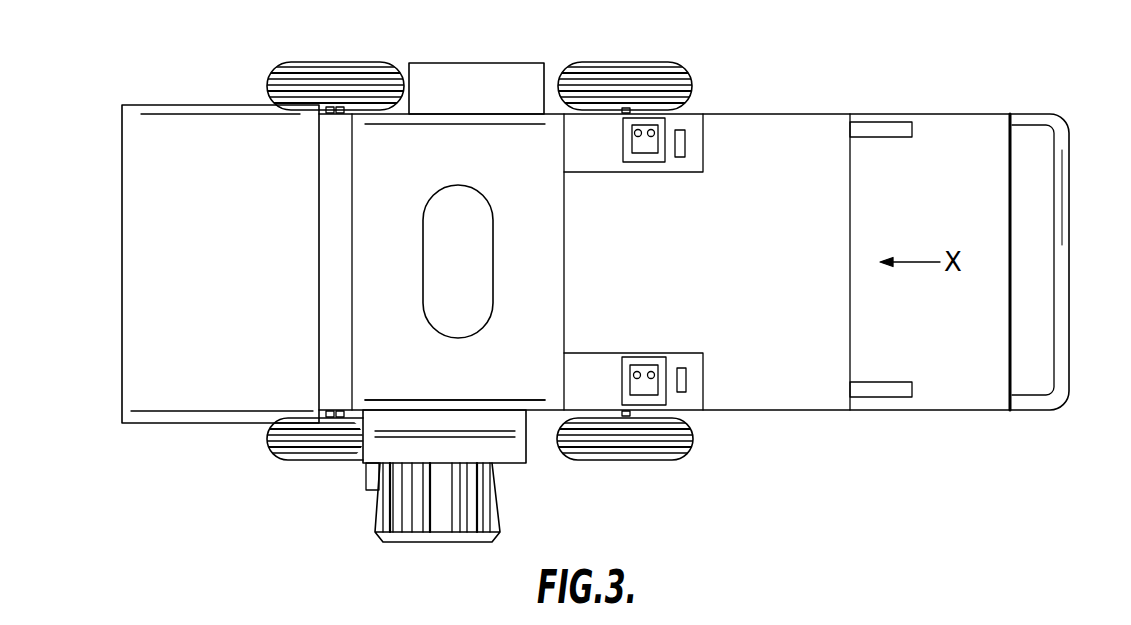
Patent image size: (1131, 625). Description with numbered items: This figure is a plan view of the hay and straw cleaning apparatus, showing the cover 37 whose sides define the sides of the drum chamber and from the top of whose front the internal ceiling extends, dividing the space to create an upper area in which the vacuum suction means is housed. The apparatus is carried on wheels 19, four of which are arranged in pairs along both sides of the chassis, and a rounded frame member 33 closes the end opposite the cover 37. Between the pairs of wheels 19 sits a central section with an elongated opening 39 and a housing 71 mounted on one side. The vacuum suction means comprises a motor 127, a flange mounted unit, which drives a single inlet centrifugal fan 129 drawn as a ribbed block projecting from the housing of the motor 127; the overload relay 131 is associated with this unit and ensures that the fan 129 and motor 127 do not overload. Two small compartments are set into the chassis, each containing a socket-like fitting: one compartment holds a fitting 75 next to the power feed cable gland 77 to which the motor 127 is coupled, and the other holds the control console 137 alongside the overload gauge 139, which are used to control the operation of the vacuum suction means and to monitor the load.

The wheel 19 is at (340, 80).
The rear bumper frame 33 is at (1058, 252).
The cover 37 is at (197, 418).
The opening 39 is at (428, 243).
The housing 71 is at (486, 75).
The socket 75 is at (637, 362).
The power feed cable gland 77 is at (683, 370).
The motor 127 is at (440, 420).
The single inlet centrifugal fan 129 is at (472, 497).
The overload relay 131 is at (386, 415).
The control console 137 is at (641, 148).
The overload gauge 139 is at (683, 150).